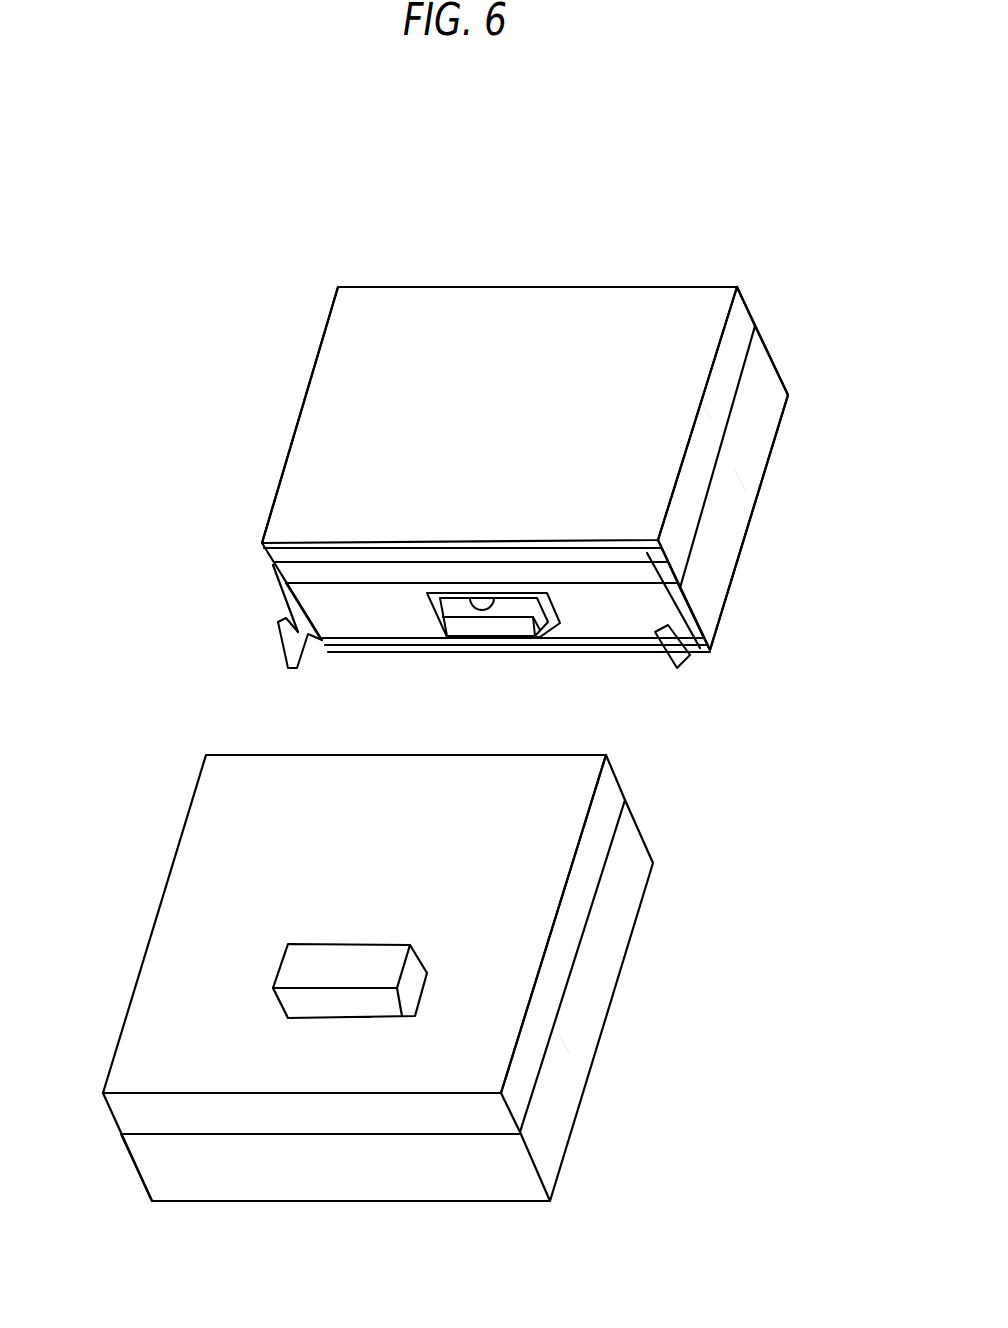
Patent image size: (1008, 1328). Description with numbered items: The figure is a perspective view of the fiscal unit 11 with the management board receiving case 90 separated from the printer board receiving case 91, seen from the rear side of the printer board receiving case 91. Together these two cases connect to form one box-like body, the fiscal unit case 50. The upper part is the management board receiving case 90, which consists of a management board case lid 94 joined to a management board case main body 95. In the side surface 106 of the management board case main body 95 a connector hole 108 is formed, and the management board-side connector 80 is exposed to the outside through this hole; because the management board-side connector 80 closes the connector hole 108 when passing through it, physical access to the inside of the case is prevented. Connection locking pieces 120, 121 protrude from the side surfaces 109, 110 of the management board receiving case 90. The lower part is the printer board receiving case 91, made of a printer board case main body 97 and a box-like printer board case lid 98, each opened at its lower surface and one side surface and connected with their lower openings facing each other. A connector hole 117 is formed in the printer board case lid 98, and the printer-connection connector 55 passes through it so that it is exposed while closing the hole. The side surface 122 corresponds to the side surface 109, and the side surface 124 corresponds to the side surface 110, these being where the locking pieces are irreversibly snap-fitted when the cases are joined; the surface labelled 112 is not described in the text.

The fiscal unit 11 is at (527, 217).
The fiscal unit case 50 is at (142, 453).
The management board receiving case 90 is at (347, 481).
The printer board receiving case 91 is at (221, 822).
The management board case lid 94 is at (742, 327).
The management board case main body 95 is at (762, 387).
The side surface 110 is at (312, 367).
The side surface 112 is at (702, 440).
The side surface 109 is at (740, 497).
The connector hole 108 is at (498, 592).
The management board-side connector 80 is at (488, 620).
The side surface 106 is at (607, 622).
The connection locking piece 120 is at (690, 655).
The connection locking piece 121 is at (290, 662).
The printer board case lid 98 is at (584, 876).
The printer board case main body 97 is at (597, 987).
The side surface 122 is at (567, 1046).
The side surface 124 is at (139, 1172).
The printer-connection connector 55 is at (282, 965).
The connector hole 117 is at (352, 1008).